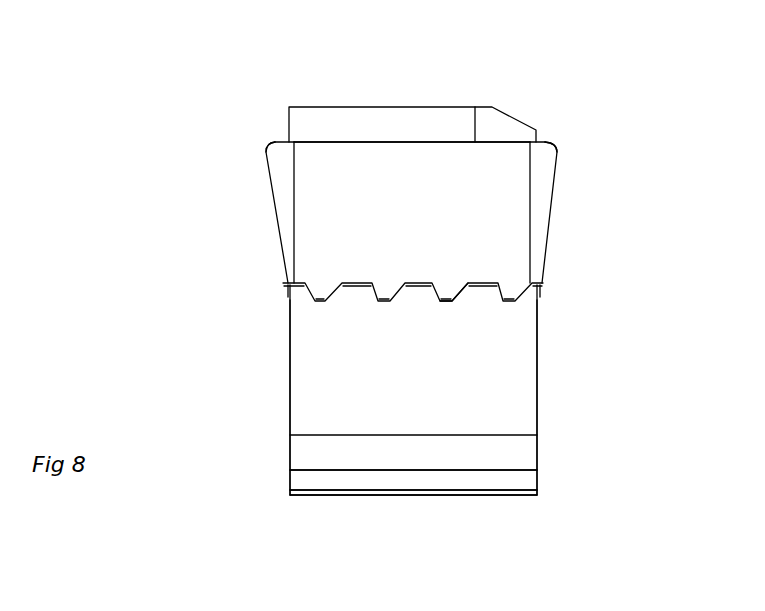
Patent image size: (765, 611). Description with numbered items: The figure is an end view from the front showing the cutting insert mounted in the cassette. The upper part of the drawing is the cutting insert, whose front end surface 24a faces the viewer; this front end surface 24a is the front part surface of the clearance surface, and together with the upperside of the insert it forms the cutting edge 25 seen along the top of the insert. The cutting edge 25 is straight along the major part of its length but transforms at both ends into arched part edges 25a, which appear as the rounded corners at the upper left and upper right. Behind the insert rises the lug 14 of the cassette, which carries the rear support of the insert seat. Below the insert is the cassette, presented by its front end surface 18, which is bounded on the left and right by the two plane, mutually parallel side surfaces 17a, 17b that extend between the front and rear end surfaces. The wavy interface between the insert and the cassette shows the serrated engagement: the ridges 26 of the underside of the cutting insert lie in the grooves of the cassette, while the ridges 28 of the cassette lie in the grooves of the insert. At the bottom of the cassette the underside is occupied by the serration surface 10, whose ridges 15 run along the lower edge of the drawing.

The serration surface 10 is at (328, 503).
The lug 14 is at (358, 125).
The ridges 15 is at (440, 478).
The side surface 17a is at (288, 379).
The side surface 17b is at (538, 393).
The front end surface 18 is at (406, 385).
The front end surface 24a is at (413, 210).
The cutting edge 25 is at (428, 143).
The arched part edges 25a is at (267, 145).
The ridges 26 is at (452, 285).
The ridges 28 is at (412, 294).